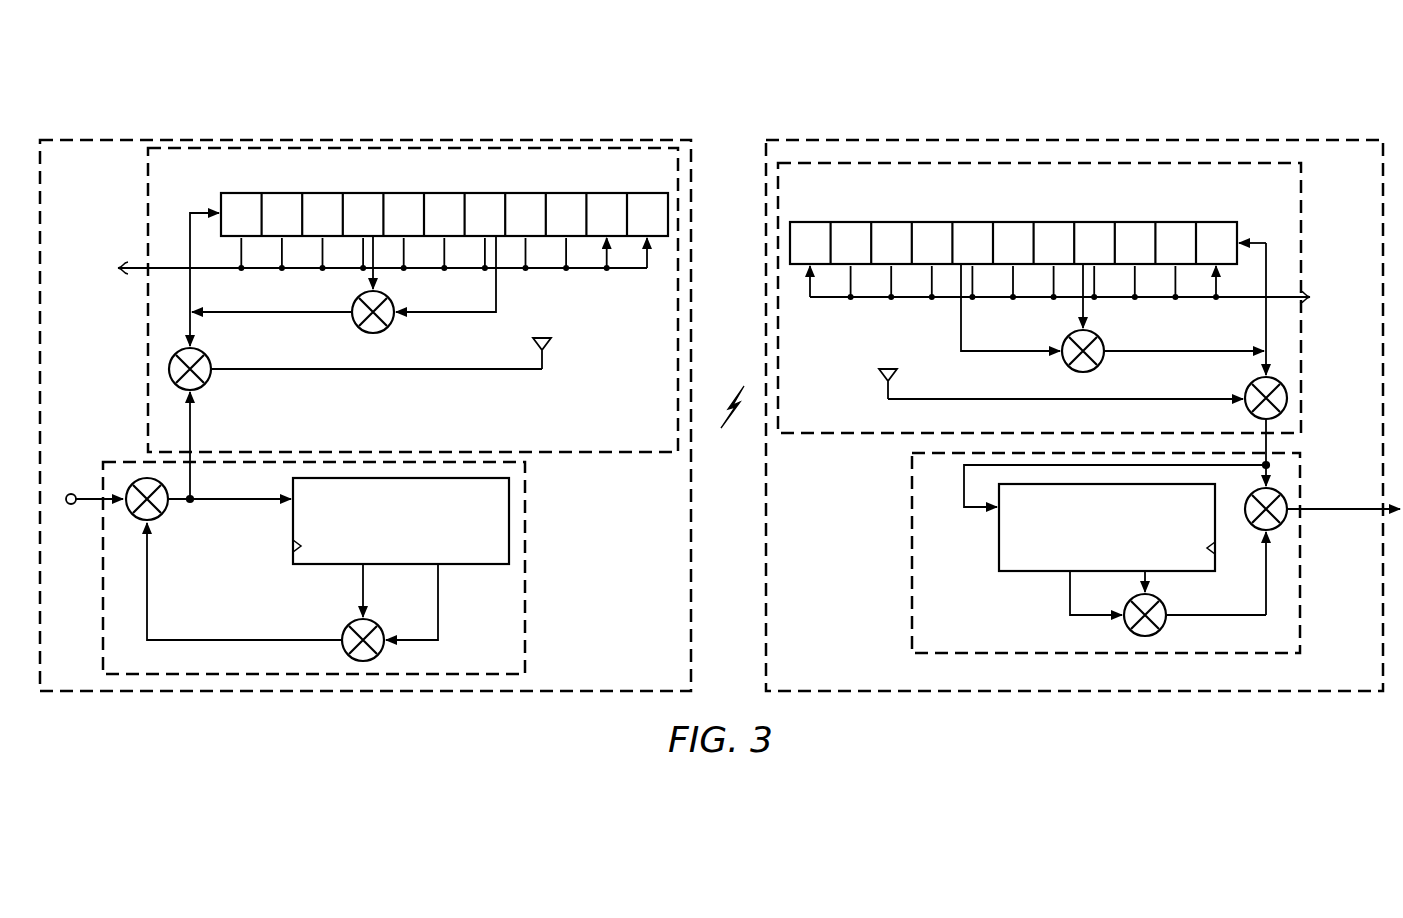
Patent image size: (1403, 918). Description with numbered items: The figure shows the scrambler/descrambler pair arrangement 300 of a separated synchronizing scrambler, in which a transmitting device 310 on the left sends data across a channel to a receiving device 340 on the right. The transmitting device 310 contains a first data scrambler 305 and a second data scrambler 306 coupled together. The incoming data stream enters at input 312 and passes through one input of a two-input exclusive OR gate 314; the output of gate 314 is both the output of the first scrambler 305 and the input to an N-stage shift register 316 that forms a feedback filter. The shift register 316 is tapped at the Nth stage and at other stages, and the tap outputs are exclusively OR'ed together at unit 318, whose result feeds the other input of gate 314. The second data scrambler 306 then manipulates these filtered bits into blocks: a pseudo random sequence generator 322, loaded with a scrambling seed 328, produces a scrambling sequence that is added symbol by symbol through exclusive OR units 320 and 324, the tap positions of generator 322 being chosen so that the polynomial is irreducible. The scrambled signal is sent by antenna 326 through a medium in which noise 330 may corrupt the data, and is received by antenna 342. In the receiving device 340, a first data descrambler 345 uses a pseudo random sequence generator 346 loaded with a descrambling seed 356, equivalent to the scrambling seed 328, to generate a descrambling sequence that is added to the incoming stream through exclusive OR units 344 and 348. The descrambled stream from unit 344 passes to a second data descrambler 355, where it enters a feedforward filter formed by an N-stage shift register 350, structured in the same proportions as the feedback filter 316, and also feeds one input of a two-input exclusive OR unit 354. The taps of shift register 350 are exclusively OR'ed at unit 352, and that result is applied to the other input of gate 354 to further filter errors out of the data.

The scrambler/descrambler pair arrangement 300 is at (123, 84).
The transmitting device 310 is at (90, 183).
The second data scrambler 306 is at (540, 429).
The first data scrambler 305 is at (505, 659).
The pseudo random sequence generator 322 is at (217, 195).
The scrambling seed 328 is at (120, 262).
The exclusive OR unit 324 is at (352, 306).
The exclusive OR unit 320 is at (200, 387).
The antenna 326 is at (549, 346).
The noise 330 is at (740, 392).
The input 312 is at (73, 492).
The exclusive OR gate 314 is at (162, 518).
The N-stage shift register 316 is at (291, 530).
The exclusive OR unit 318 is at (344, 631).
The receiving device 340 is at (833, 601).
The first data descrambler 345 is at (855, 198).
The second data descrambler 355 is at (1008, 625).
The pseudo random sequence generator 346 is at (1014, 220).
The descrambling seed 356 is at (1312, 295).
The exclusive OR unit 348 is at (1066, 364).
The antenna 342 is at (880, 380).
The exclusive OR unit 344 is at (1247, 390).
The N-stage shift register 350 is at (997, 532).
The exclusive OR unit 352 is at (1167, 625).
The exclusive OR gate 354 is at (1253, 530).